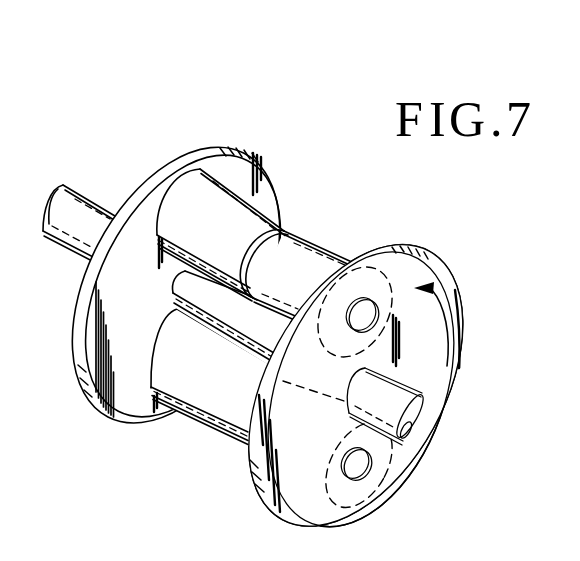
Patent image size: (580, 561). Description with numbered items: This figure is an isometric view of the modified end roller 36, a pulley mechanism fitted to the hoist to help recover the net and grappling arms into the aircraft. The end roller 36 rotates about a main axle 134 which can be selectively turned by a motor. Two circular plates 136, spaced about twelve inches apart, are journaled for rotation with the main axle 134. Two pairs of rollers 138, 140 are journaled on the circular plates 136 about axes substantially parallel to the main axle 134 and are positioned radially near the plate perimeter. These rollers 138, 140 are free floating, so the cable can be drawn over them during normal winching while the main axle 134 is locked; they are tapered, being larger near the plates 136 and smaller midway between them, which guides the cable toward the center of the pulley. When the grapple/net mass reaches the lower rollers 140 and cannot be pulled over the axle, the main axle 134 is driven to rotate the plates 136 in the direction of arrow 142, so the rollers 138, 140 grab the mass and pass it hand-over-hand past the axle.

The end roller 36 is at (227, 102).
The main axle 134 is at (421, 404).
The circular plates 136 is at (258, 160).
The rollers 138 is at (321, 238).
The rollers 140 is at (230, 440).
The arrow 142 is at (448, 331).